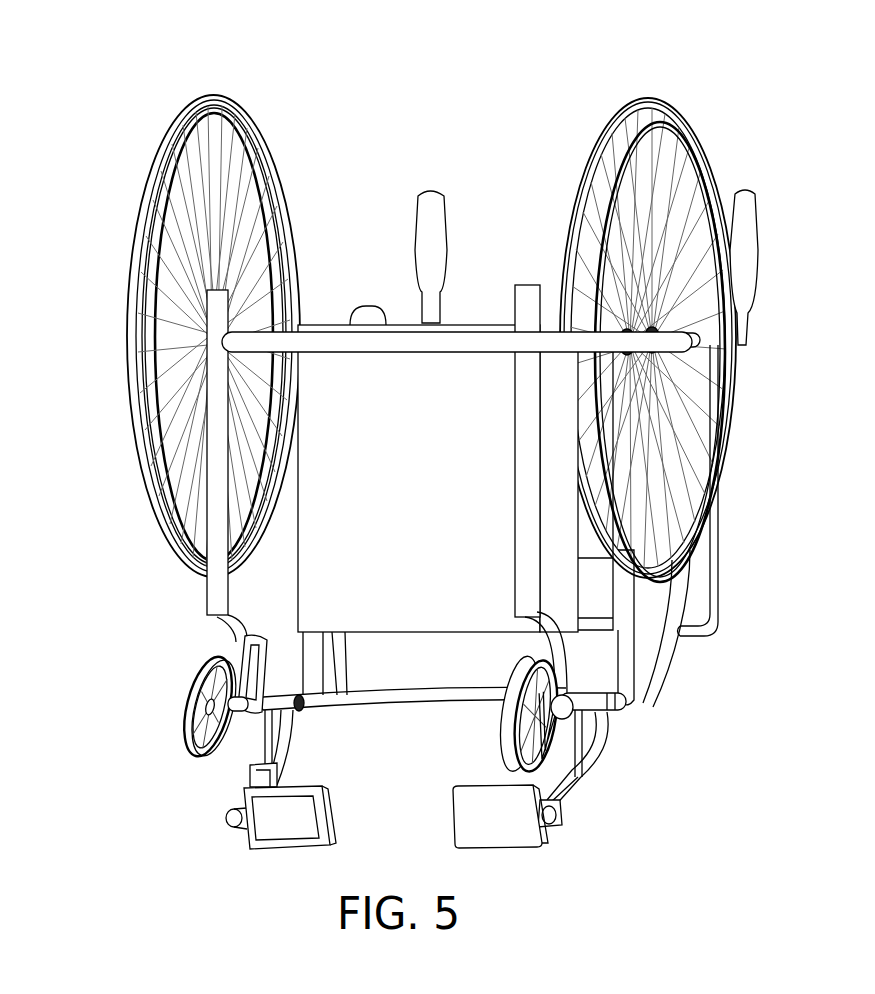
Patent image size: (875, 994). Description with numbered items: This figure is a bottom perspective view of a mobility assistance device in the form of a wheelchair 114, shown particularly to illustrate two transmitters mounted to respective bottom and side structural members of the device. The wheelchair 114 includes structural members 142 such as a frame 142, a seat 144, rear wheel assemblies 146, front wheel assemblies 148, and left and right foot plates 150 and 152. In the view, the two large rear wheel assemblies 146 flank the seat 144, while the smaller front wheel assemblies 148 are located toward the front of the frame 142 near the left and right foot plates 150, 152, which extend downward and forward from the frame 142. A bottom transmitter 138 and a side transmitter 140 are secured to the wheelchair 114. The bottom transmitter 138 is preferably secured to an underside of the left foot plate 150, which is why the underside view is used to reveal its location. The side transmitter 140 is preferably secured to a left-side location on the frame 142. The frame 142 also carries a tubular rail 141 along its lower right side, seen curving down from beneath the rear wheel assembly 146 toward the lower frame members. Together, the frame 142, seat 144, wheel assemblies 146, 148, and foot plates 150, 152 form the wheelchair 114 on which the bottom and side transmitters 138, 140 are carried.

The wheelchair 114 is at (713, 160).
The bottom transmitter 138 is at (286, 820).
The side transmitter 140 is at (250, 772).
The frame rail 141 is at (660, 697).
The frame 142 is at (625, 612).
The seat 144 is at (470, 392).
The rear wheel assemblies 146 is at (200, 116).
The front wheel assemblies 148 is at (194, 686).
The left foot plate 150 is at (330, 816).
The right foot plate 152 is at (502, 828).